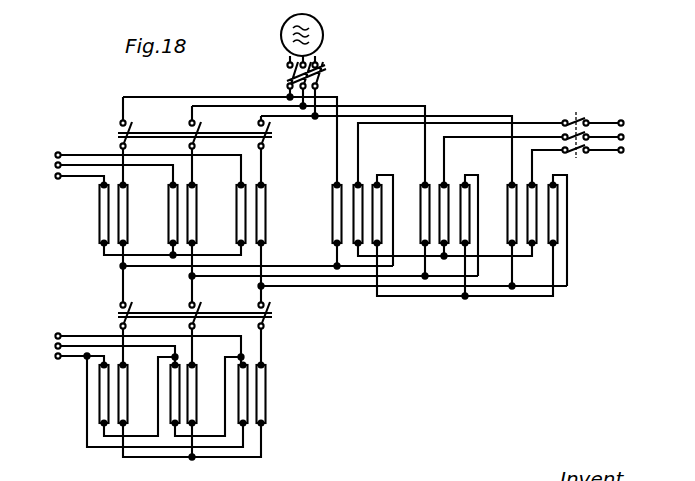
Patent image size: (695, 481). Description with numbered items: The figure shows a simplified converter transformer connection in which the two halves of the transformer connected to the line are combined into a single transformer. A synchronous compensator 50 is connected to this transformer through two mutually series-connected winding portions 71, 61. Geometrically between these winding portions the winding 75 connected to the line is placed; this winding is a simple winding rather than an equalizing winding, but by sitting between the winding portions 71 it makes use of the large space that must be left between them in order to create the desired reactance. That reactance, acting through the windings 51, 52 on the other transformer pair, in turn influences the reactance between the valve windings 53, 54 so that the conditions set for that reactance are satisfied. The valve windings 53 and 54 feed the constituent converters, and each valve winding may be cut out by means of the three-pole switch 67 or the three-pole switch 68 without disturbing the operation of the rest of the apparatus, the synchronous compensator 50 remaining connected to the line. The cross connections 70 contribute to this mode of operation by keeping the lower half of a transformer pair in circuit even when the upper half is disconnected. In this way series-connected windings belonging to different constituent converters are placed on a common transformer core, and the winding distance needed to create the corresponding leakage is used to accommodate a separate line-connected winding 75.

The synchronous compensator 50 is at (323, 36).
The transformer winding 51 is at (275, 201).
The transformer winding 52 is at (265, 381).
The valve winding 53 is at (237, 229).
The valve winding 54 is at (239, 404).
The winding portion 61 is at (559, 205).
The three-pole switch 67 is at (120, 134).
The three-pole switch 68 is at (118, 313).
The cross connections 70 is at (310, 285).
The winding portion 71 is at (509, 228).
The line winding 75 is at (533, 196).